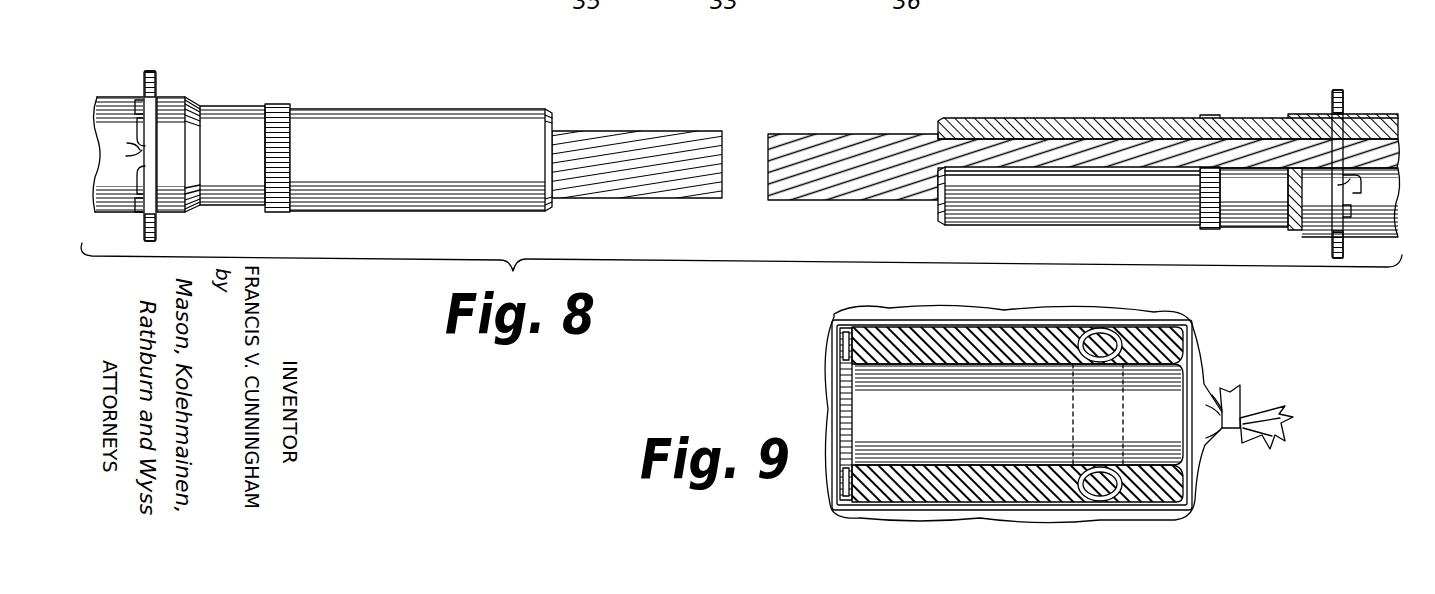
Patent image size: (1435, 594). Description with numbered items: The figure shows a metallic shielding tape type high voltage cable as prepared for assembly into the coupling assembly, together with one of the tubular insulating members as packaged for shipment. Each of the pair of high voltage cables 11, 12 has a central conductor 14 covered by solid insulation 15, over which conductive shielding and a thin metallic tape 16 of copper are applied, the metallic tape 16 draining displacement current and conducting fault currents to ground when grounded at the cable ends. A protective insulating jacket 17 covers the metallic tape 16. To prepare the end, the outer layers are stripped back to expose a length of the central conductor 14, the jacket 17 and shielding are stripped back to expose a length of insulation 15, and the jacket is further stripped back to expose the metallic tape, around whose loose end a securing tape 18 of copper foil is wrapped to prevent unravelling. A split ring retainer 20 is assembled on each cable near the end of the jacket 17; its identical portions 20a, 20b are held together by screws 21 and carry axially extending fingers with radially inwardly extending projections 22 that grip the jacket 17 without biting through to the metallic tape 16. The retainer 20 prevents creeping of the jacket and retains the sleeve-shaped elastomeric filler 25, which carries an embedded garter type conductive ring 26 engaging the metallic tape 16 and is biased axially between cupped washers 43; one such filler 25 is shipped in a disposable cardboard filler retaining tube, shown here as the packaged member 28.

In FIG. 8, the high voltage cable 11 is at (504, 107).
In FIG. 8, the high voltage cable 12 is at (963, 116).
In FIG. 8, the central conductor 14 is at (633, 137).
In FIG. 8, the solid insulation 15 is at (402, 120).
In FIG. 8, the metallic tape 16 is at (233, 107).
In FIG. 8, the protective insulating jacket 17 is at (172, 100).
In FIG. 8, the securing tape 18 is at (277, 107).
In FIG. 8, the retainer 20 is at (159, 81).
In FIG. 8, the retainer portion 20a is at (148, 71).
In FIG. 8, the retainer portion 20b is at (157, 230).
In FIG. 8, the screws 21 is at (127, 143).
In FIG. 8, the radially inwardly extending projections 22 is at (140, 113).
In FIG. 9, the elastomeric filler 25 is at (913, 332).
In FIG. 9, the garter type conductive ring 26 is at (1127, 330).
In FIG. 9, the pouch 28 is at (1162, 330).
In FIG. 9, the cupped washers 43 is at (848, 340).